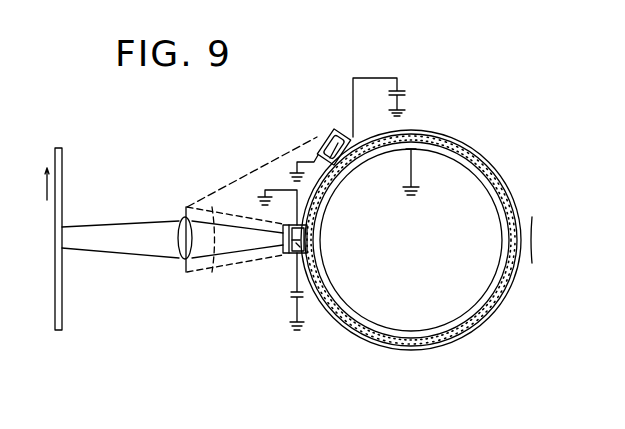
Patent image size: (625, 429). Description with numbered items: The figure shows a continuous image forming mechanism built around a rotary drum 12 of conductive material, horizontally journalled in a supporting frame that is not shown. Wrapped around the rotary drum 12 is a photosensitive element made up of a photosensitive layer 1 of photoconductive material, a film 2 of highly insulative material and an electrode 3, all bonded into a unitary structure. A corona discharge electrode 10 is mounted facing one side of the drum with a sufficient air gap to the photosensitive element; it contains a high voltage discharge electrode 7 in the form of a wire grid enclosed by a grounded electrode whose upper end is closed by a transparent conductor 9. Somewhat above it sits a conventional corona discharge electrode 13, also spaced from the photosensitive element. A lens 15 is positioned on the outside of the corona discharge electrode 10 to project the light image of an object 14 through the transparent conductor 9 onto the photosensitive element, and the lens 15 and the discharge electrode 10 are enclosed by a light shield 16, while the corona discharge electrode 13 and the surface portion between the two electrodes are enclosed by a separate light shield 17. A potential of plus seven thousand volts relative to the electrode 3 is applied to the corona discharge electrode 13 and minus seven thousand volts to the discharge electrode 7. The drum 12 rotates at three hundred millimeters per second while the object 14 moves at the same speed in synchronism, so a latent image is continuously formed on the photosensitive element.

The photosensitive layer 1 is at (458, 148).
The film of highly insulative material 2 is at (495, 171).
The electrode 3 is at (515, 204).
The high voltage discharge electrode 7 is at (308, 283).
The transparent conductor 9 is at (283, 239).
The corona discharge electrode 10 is at (283, 258).
The rotary drum 12 is at (467, 313).
The conventional corona discharge electrode 13 is at (323, 142).
The object 14 is at (63, 163).
The lens 15 is at (180, 240).
The light shield 16 is at (226, 270).
The light shield 17 is at (256, 167).